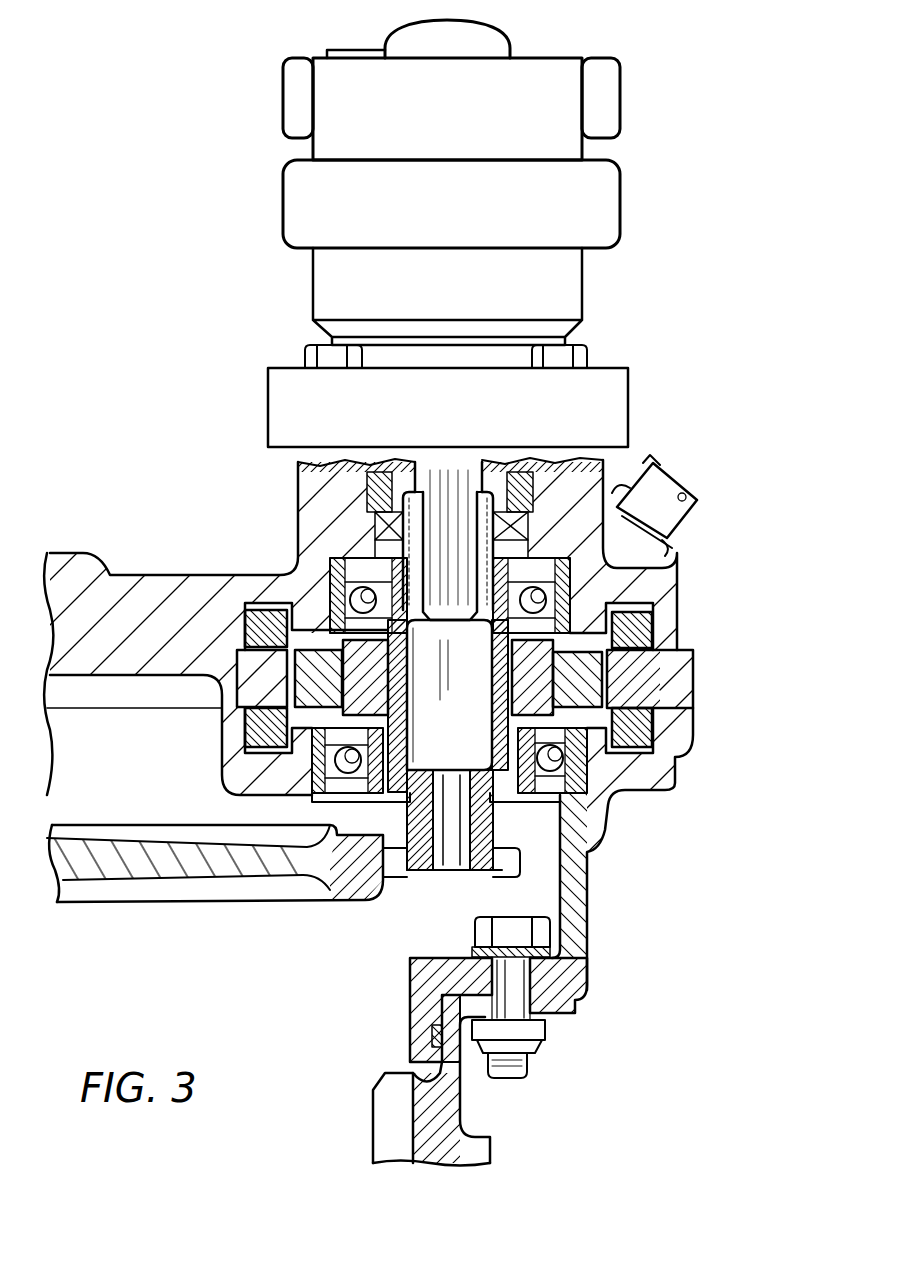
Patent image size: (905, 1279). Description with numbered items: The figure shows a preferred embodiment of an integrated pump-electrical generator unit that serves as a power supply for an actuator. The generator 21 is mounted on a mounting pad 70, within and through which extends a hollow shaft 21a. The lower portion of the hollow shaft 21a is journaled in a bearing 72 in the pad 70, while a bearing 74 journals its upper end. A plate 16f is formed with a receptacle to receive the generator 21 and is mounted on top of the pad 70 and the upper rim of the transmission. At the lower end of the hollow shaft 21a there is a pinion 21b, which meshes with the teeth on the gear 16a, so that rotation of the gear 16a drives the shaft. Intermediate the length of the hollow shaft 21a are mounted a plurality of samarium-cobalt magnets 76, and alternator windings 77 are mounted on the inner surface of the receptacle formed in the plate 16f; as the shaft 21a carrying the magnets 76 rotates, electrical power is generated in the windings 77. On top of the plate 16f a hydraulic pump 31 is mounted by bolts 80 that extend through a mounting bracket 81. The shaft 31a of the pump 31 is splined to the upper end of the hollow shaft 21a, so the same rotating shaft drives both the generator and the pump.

The hydraulic pump 31 is at (585, 216).
The bolts 80 is at (305, 356).
The mounting bracket 81 is at (298, 424).
The pump shaft 31a is at (460, 466).
The plate 16f is at (147, 592).
The bearing 74 is at (533, 613).
The samarium-cobalt magnets 76 is at (300, 675).
The alternator windings 77 is at (257, 701).
The generator 21 is at (735, 730).
The hollow shaft 21a is at (415, 773).
The mounting pad 70 is at (650, 772).
The bearing 72 is at (576, 795).
The gear 16a is at (355, 868).
The pinion 21b is at (520, 862).